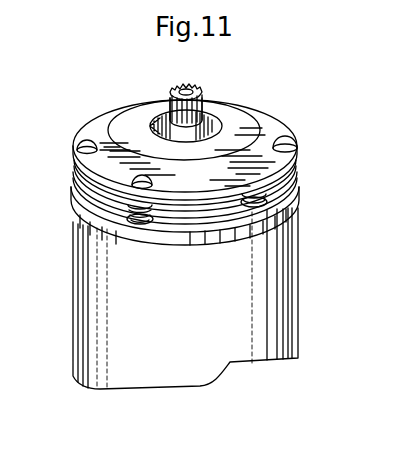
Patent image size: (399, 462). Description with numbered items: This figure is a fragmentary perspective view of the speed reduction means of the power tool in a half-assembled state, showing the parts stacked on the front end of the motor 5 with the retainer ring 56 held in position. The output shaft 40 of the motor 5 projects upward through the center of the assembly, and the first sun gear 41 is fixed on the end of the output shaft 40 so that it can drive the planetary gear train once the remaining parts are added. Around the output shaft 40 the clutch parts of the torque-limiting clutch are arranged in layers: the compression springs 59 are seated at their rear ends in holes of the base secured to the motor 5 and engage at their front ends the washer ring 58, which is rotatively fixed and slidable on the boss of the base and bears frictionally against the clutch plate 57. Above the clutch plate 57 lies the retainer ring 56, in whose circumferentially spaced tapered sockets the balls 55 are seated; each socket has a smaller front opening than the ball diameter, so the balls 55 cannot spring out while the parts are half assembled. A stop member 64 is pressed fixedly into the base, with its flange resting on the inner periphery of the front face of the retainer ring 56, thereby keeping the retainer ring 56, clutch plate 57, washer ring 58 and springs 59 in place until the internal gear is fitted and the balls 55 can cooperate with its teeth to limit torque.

The motor 5 is at (283, 280).
The output shaft 40 is at (190, 130).
The first sun gear 41 is at (203, 100).
The balls 55 is at (78, 146).
The retainer ring 56 is at (115, 148).
The clutch plate 57 is at (293, 163).
The washer ring 58 is at (293, 173).
The compression springs 59 is at (132, 212).
The stop member 64 is at (143, 116).